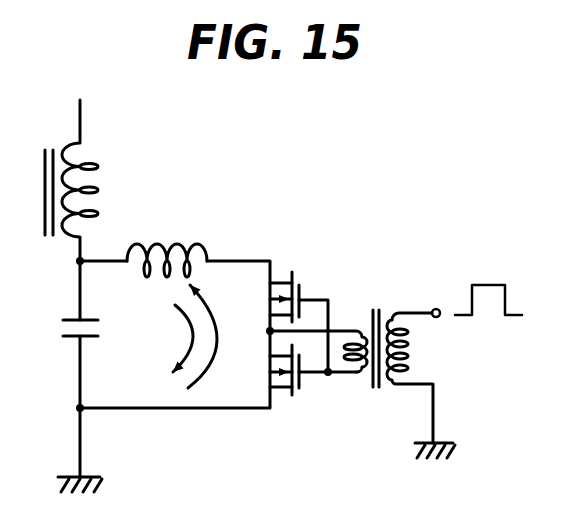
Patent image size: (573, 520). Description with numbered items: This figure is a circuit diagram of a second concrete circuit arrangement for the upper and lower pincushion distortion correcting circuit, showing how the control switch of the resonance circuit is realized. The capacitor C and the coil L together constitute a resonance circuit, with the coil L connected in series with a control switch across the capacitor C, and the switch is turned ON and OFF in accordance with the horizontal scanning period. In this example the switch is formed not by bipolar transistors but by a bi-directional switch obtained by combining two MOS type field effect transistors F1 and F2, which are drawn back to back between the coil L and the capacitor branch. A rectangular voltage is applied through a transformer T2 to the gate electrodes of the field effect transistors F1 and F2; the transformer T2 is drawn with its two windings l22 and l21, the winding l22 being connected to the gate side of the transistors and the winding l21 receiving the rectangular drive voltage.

The coil L is at (167, 243).
The capacitor C is at (68, 329).
The MOS type field effect transistor F1 is at (308, 280).
The MOS type field effect transistor F2 is at (293, 395).
The transformer T2 is at (375, 363).
The primary winding of transformer T2 l21 is at (408, 348).
The secondary winding of transformer T2 l22 is at (356, 366).